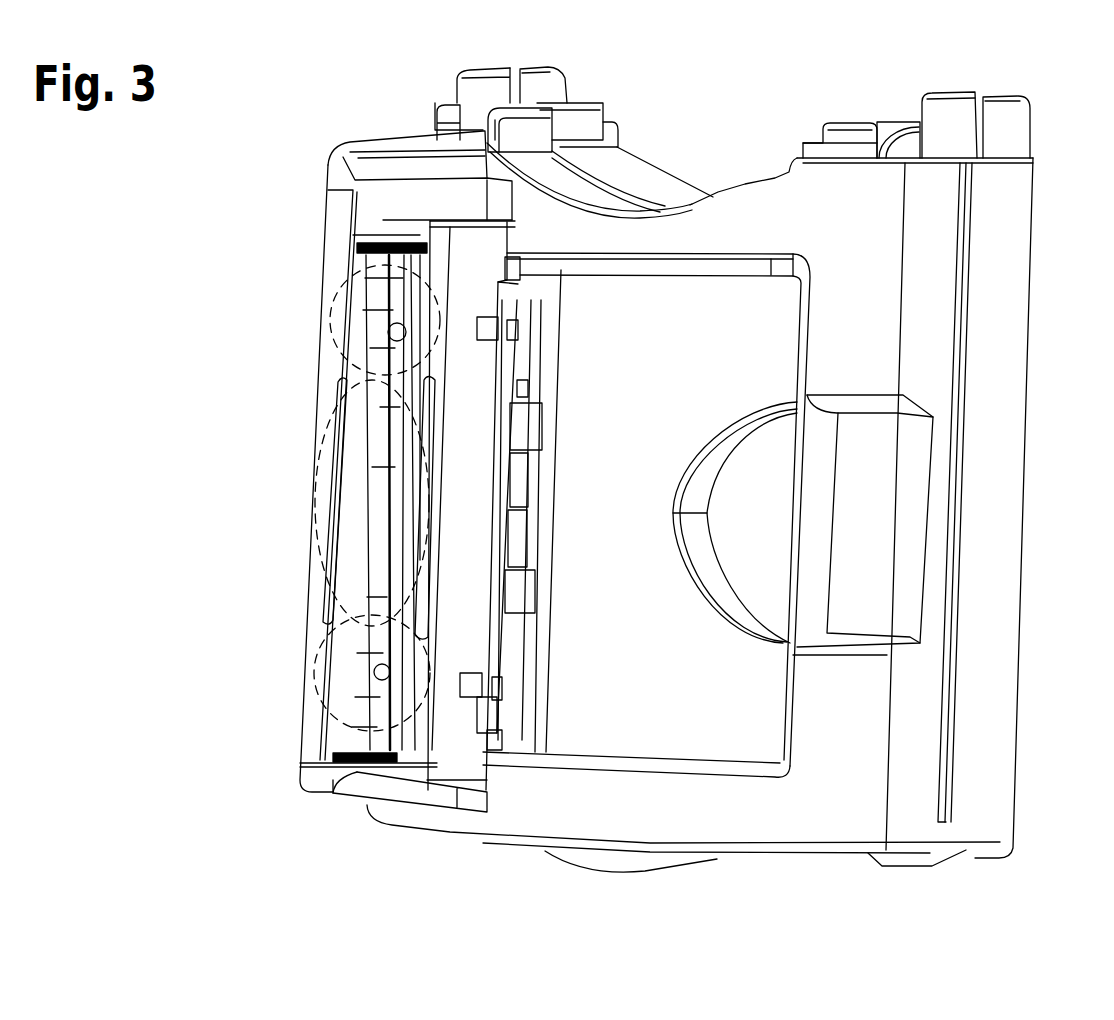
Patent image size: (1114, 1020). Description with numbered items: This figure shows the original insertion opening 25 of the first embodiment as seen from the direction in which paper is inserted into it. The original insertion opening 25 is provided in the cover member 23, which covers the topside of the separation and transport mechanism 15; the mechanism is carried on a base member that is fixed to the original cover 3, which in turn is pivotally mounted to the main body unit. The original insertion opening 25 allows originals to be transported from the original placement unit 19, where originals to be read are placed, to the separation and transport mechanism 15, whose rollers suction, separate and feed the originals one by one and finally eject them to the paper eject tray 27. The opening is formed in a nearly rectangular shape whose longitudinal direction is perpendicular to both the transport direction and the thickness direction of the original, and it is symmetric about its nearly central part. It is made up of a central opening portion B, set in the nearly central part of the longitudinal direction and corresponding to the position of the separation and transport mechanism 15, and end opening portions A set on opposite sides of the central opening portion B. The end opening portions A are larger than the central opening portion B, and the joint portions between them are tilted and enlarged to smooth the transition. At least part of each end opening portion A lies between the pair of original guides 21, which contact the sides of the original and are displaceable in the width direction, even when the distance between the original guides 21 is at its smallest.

The original cover 3 is at (940, 284).
The separation and transport mechanism 15 is at (395, 420).
The original placement unit 19 is at (457, 763).
The original guides 21 is at (398, 245).
The cover member 23 is at (327, 222).
The original insertion opening 25 is at (378, 293).
The paper eject tray 27 is at (684, 312).
The end opening portions A is at (300, 310).
The central opening portion B is at (315, 482).